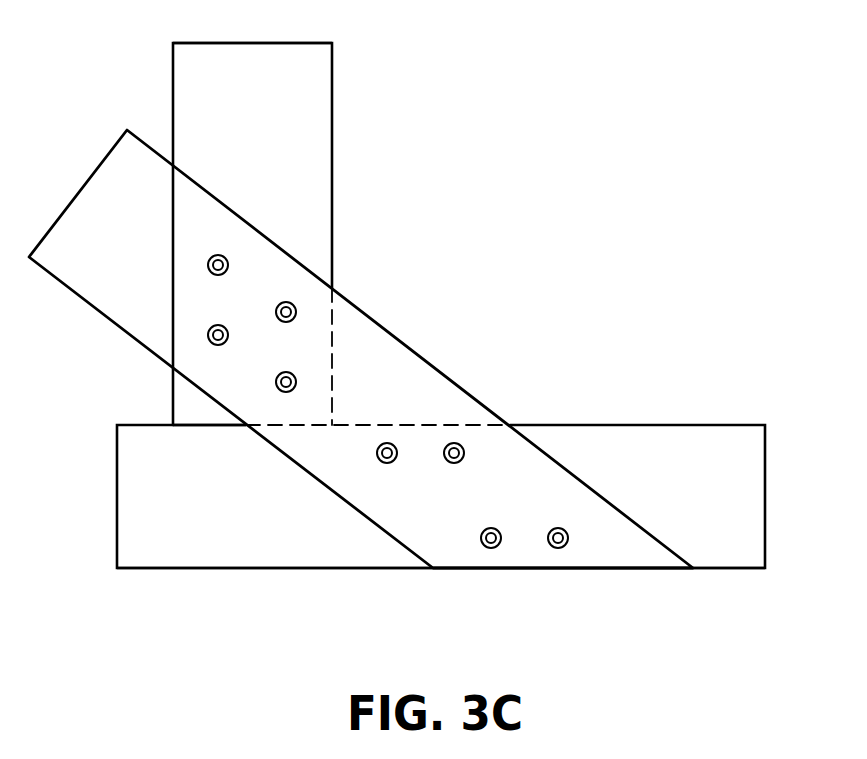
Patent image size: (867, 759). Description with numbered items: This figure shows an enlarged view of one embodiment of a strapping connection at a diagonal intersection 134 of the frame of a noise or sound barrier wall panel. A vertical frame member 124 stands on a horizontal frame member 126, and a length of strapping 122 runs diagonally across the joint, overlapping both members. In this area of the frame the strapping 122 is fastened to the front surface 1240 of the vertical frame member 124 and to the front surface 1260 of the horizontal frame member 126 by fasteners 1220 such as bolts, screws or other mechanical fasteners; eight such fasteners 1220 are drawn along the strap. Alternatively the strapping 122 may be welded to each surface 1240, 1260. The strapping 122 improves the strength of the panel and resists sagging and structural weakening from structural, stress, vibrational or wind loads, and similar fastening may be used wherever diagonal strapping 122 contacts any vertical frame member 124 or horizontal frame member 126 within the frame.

The vertical frame member 124 is at (333, 85).
The front surface of the vertical frame member 1240 is at (287, 172).
The horizontal frame member 126 is at (692, 375).
The front surface of the horizontal frame member 1260 is at (324, 523).
The strapping 122 is at (387, 353).
The fasteners 1220 is at (455, 443).
The diagonal intersection 134 is at (372, 535).